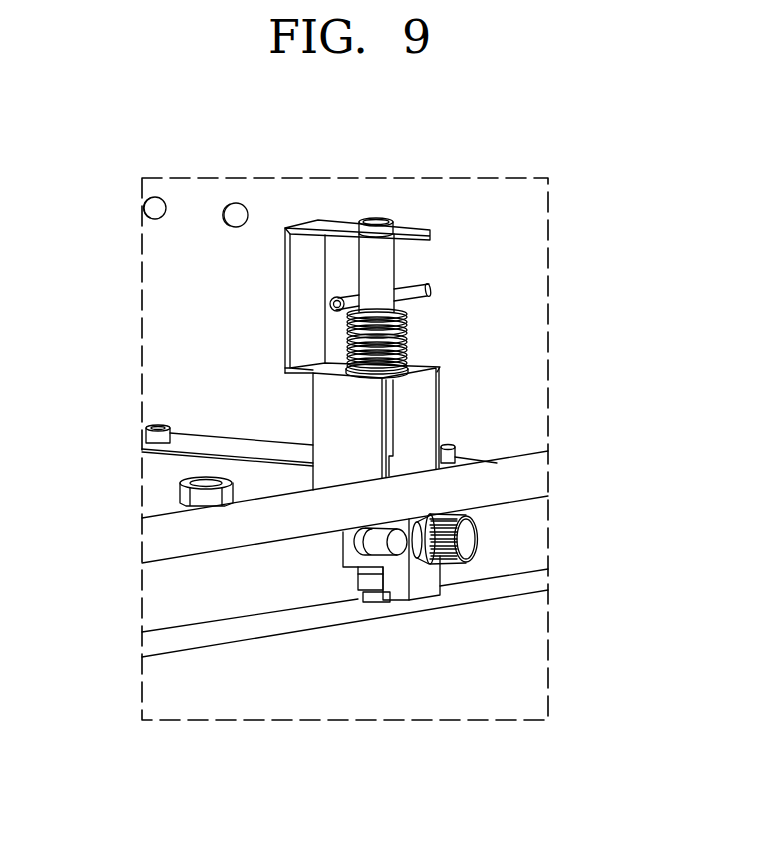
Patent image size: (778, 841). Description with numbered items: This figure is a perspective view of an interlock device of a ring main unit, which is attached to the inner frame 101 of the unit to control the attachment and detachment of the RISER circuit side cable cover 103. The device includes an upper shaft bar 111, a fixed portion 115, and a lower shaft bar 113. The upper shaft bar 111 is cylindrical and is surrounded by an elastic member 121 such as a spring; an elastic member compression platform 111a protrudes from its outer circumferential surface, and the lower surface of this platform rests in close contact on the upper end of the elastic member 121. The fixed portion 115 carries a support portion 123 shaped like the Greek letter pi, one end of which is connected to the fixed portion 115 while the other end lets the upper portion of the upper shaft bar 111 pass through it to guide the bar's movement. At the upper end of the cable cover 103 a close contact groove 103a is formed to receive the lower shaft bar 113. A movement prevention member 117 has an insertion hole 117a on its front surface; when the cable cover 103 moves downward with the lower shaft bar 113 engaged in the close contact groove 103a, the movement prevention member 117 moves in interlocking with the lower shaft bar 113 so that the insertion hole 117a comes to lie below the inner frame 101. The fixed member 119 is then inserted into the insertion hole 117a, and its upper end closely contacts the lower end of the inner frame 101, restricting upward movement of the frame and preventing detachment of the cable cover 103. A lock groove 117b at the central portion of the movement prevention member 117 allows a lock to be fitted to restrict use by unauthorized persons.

The inner frame 101 is at (528, 477).
The cable cover 103 is at (518, 623).
The close contact groove 103a is at (352, 600).
The upper shaft bar 111 is at (382, 259).
The elastic member compression platform 111a is at (432, 292).
The lower shaft bar 113 is at (372, 590).
The fixed portion 115 is at (437, 410).
The movement prevention member 117 is at (418, 588).
The insertion hole 117a is at (409, 572).
The lock groove 117b is at (380, 545).
The fixed member 119 is at (458, 537).
The elastic member 121 is at (407, 337).
The support portion 123 is at (339, 224).